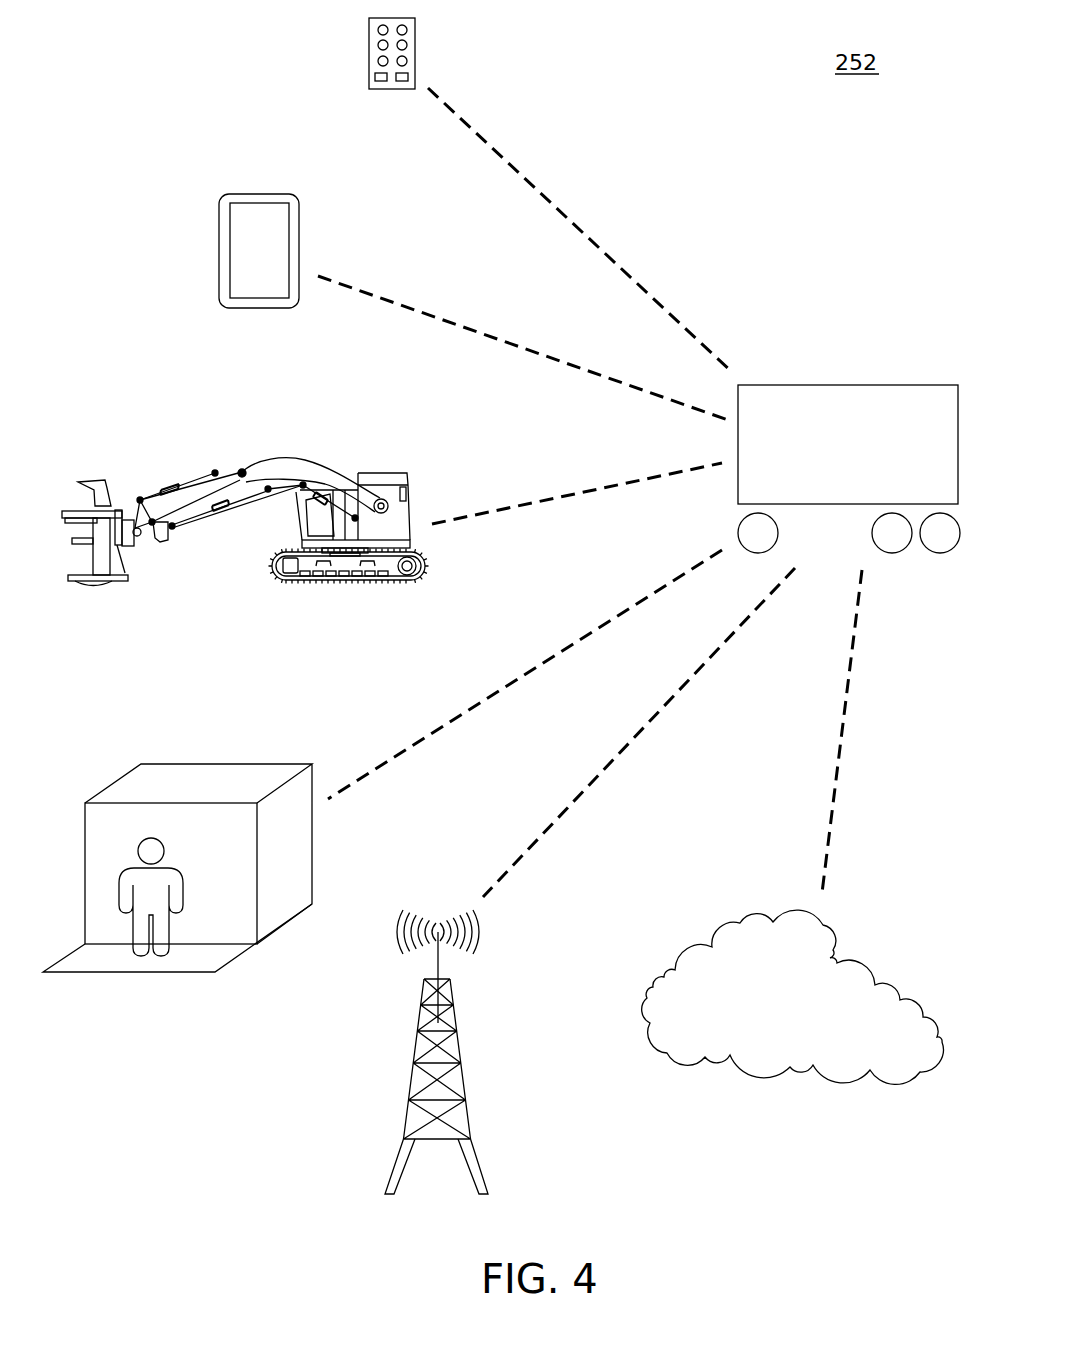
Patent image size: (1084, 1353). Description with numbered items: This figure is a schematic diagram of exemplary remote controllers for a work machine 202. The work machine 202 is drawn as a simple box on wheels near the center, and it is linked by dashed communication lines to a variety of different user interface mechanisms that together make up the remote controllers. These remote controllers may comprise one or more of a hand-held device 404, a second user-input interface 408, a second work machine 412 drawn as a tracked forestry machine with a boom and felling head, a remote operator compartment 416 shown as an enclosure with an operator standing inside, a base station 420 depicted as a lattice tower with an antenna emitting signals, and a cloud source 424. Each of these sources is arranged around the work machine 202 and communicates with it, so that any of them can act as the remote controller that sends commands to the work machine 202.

The work machine 202 is at (864, 385).
The hand-held device 404 is at (369, 48).
The second user-input interface 408 is at (220, 238).
The second work machine 412 is at (347, 471).
The remote operator compartment 416 is at (227, 785).
The base station 420 is at (457, 1033).
The cloud source 424 is at (858, 962).